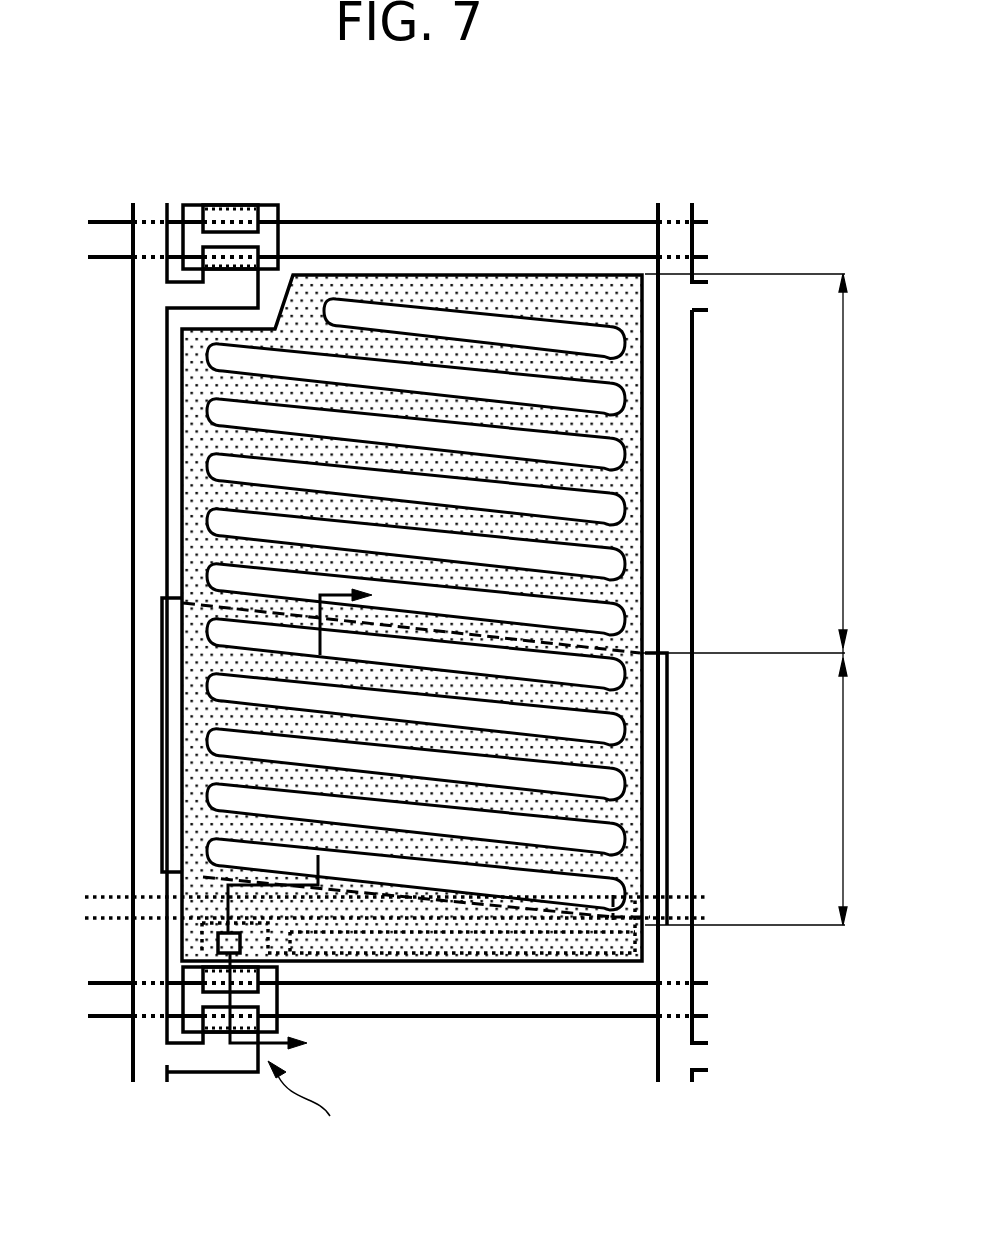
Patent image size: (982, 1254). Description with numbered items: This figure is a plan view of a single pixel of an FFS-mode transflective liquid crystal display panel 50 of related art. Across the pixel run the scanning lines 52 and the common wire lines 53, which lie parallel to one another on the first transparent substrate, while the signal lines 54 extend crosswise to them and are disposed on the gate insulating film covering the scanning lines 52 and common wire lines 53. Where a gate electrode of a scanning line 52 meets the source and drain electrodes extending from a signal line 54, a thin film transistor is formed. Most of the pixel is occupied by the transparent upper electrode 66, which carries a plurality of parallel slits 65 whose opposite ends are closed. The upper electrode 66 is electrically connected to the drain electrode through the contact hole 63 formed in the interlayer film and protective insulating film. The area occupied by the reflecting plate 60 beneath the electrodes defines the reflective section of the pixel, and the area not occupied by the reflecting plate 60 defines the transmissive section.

The FFS-mode transflective liquid crystal display panel 50 is at (176, 124).
The scanning line 52 is at (599, 237).
The common wire line 53 is at (195, 894).
The signal line 54 is at (150, 384).
The reflecting plate 60 is at (650, 651).
The contact hole 63 is at (217, 945).
The slit 65 is at (545, 450).
The upper electrode 66 is at (218, 500).